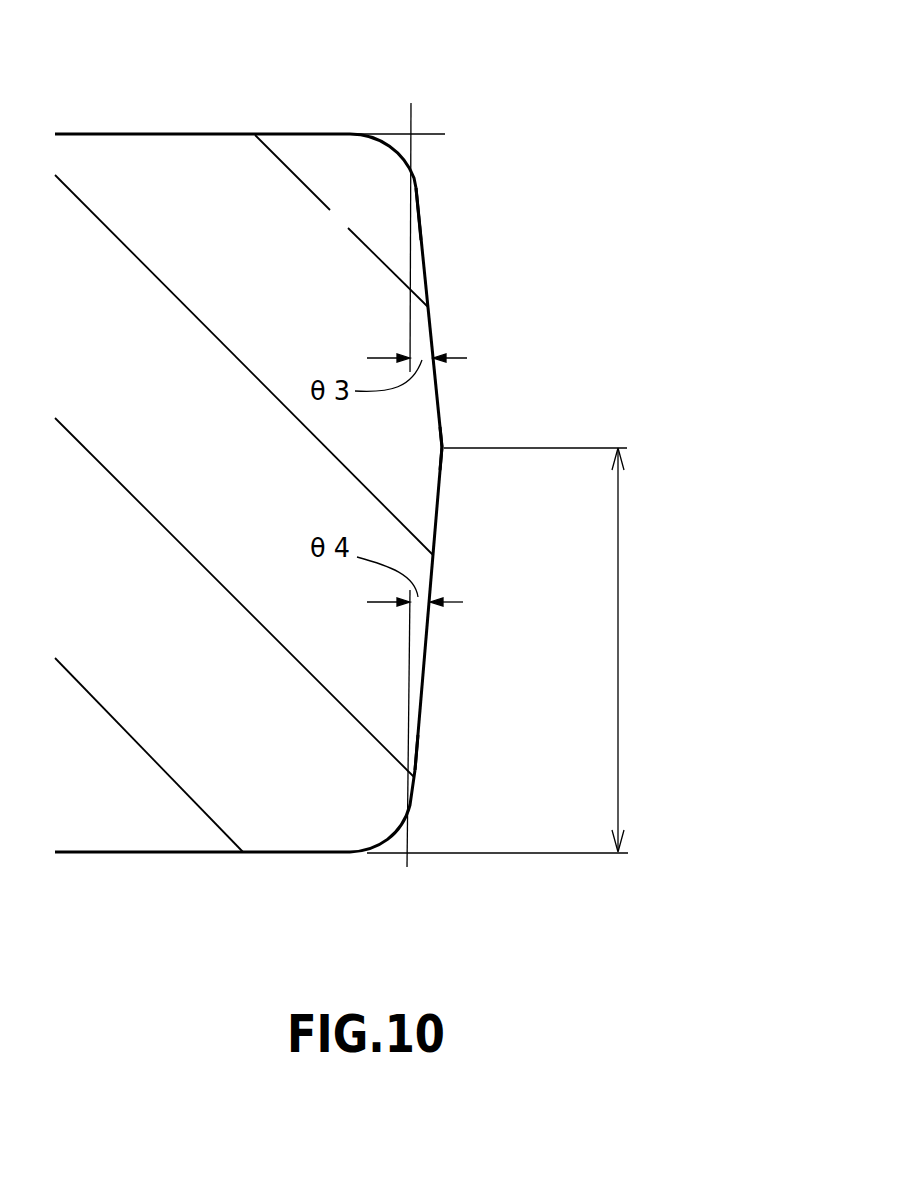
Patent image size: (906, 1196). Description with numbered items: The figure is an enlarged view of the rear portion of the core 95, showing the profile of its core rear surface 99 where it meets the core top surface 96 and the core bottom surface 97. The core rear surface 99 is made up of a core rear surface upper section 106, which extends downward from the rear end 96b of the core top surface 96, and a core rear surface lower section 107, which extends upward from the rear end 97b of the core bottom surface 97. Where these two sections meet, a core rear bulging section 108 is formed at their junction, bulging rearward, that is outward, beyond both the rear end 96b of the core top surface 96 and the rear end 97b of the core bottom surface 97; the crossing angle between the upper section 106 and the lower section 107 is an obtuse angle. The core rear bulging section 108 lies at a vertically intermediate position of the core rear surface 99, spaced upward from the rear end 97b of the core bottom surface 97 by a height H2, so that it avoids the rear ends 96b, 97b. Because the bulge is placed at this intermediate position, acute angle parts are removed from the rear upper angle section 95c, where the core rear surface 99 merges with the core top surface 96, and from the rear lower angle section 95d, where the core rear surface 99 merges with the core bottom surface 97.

The core 95 is at (473, 137).
The core top surface 96 is at (173, 150).
The core bottom surface 97 is at (200, 837).
The rear end of the core top surface 96b is at (378, 160).
The rear end of the core bottom surface 97b is at (375, 833).
The rear upper angle section 95c is at (392, 168).
The rear lower angle section 95d is at (390, 820).
The core rear surface 99 is at (755, 603).
The core rear surface upper section 106 is at (430, 333).
The core rear surface lower section 107 is at (420, 627).
The core rear bulging section 108 is at (425, 433).
The height H2 is at (620, 664).